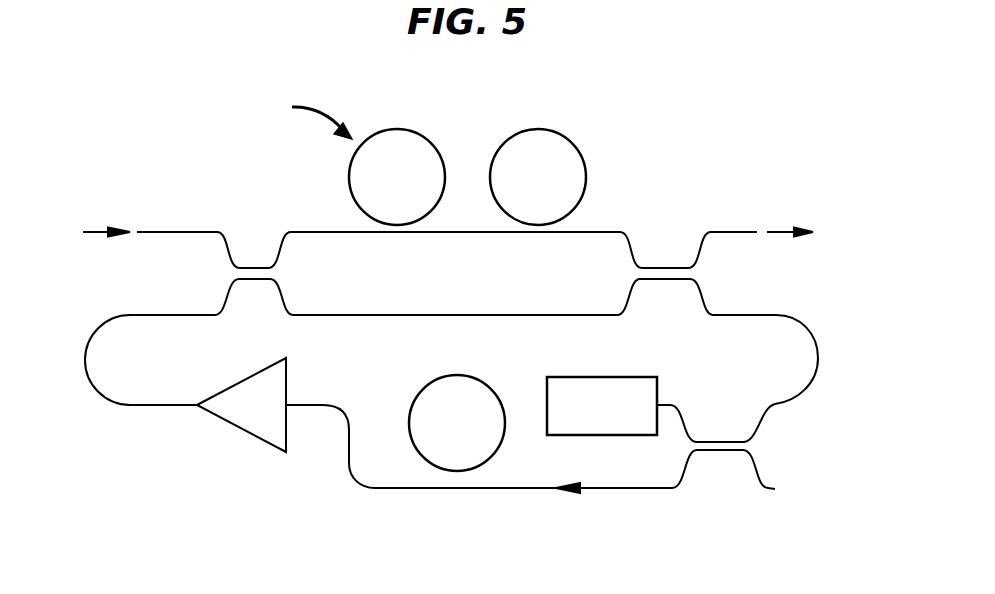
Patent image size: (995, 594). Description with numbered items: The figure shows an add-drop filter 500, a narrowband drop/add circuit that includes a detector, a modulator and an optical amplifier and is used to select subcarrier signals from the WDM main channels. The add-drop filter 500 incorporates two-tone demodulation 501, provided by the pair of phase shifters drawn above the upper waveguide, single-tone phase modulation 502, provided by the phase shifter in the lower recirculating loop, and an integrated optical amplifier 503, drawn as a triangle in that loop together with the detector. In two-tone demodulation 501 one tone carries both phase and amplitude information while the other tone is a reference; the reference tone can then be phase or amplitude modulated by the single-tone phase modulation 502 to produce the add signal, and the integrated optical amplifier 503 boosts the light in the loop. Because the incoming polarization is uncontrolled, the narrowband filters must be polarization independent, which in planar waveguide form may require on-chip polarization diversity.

The add-drop filter 500 is at (598, 550).
The two-tone demodulation 501 is at (392, 129).
The single-tone phase modulation 502 is at (417, 392).
The integrated optical amplifier 503 is at (239, 430).